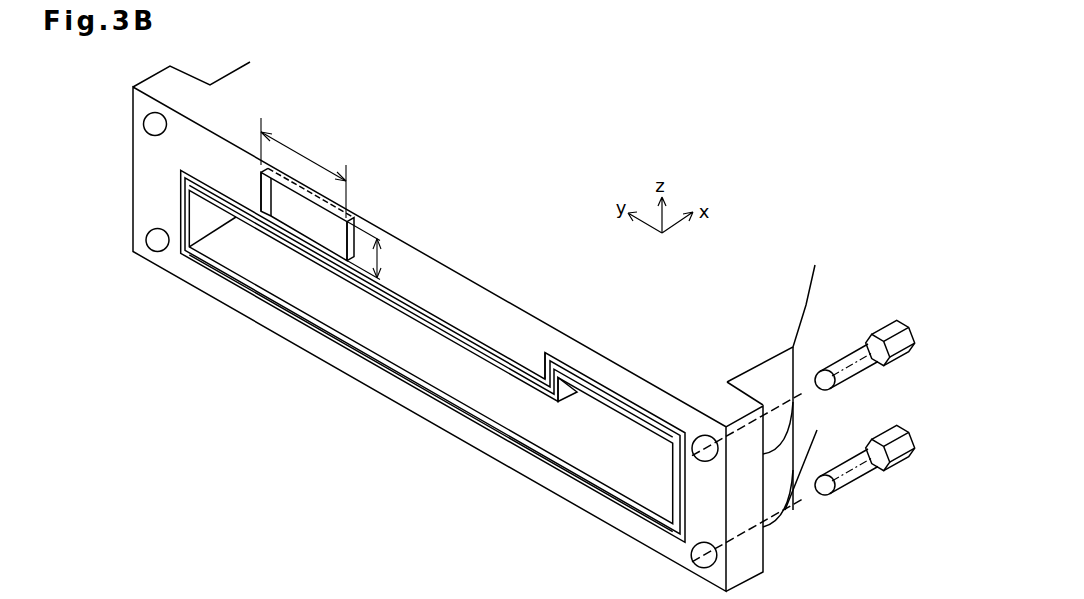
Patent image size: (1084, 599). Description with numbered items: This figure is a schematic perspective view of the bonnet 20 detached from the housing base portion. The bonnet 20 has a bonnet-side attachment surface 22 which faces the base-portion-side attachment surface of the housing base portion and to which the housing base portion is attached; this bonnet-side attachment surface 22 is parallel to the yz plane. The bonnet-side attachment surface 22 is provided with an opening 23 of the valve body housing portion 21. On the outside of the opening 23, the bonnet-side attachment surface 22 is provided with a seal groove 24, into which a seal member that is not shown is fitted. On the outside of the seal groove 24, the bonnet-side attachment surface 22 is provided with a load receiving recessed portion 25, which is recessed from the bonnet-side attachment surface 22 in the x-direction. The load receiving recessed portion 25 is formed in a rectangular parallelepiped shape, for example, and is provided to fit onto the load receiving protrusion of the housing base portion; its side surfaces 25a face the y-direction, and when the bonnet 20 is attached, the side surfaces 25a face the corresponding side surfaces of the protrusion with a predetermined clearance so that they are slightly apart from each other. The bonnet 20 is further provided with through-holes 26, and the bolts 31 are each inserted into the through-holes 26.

The bonnet 20 is at (260, 97).
The valve body housing portion 21 is at (475, 387).
The bonnet-side attachment surface 22 is at (443, 292).
The opening 23 is at (408, 368).
The seal groove 24 is at (551, 362).
The load receiving recessed portion 25 is at (294, 202).
The side surfaces of the load receiving recessed portion 25a is at (265, 193).
The through-holes 26 is at (155, 237).
The bolts 31 is at (905, 430).